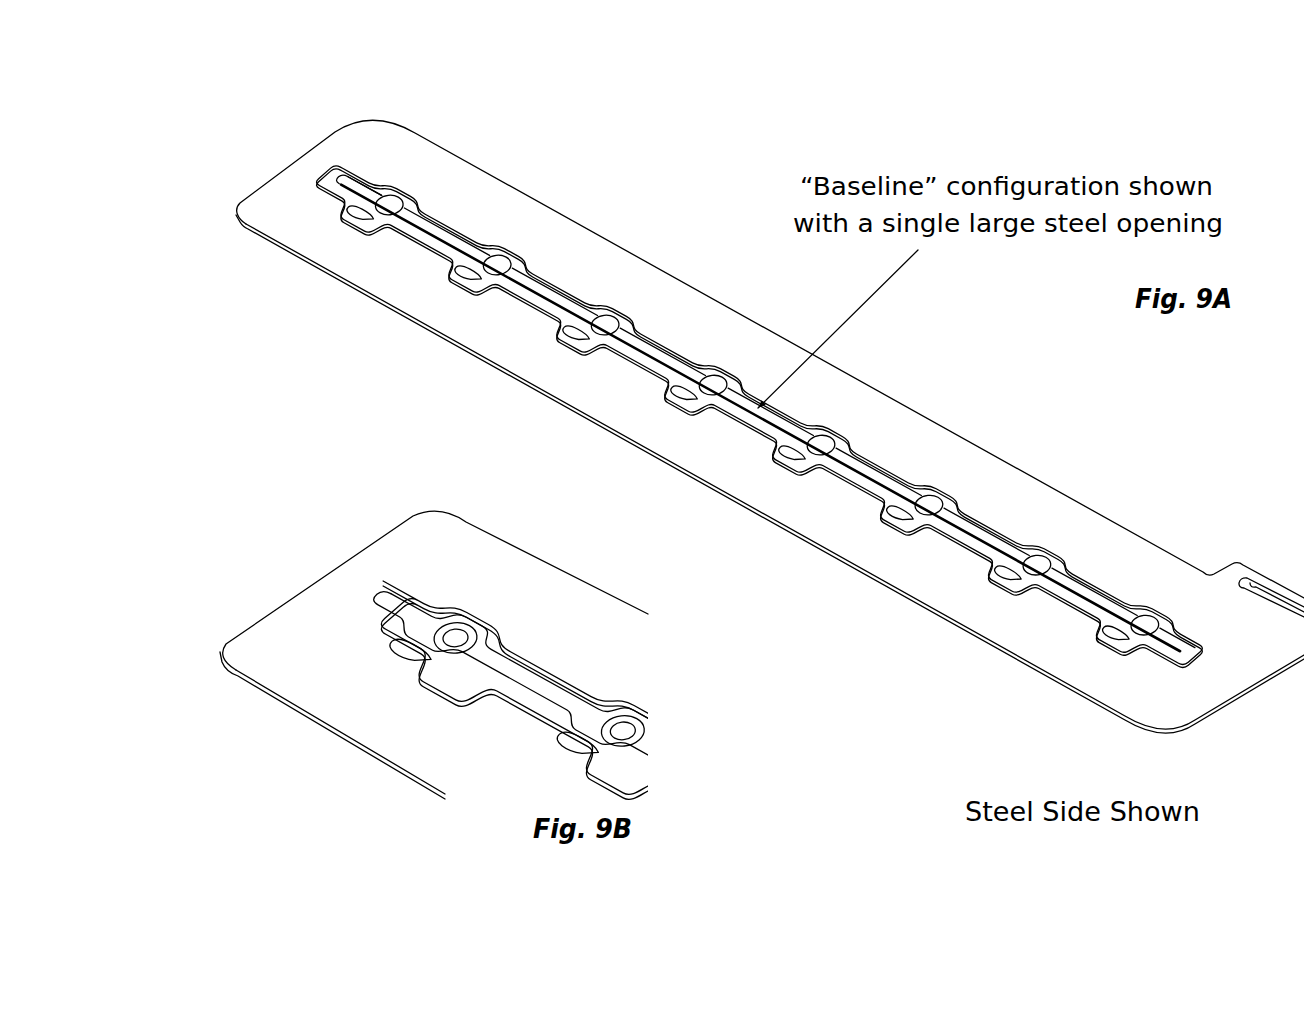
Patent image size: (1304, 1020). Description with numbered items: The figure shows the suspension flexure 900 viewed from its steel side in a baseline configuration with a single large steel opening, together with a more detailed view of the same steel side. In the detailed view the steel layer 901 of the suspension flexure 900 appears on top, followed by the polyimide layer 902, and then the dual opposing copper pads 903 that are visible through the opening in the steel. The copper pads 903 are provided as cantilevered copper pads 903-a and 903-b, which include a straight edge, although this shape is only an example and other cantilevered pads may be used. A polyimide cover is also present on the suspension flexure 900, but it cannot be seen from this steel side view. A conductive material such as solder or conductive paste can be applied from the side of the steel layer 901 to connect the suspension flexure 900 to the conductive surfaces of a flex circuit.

In FIG. 9A, the suspension flexure 900 is at (1008, 468).
In FIG. 9B, the steel layer 901 is at (316, 640).
In FIG. 9B, the polyimide layer 902 is at (568, 700).
In FIG. 9A, the dual opposing copper pads 903 is at (730, 357).
In FIG. 9B, the dual opposing copper pads 903 is at (539, 667).
In FIG. 9A, the cantilevered copper pad 903-a is at (510, 250).
In FIG. 9B, the cantilevered copper pad 903-a is at (457, 634).
In FIG. 9A, the cantilevered copper pad 903-b is at (467, 280).
In FIG. 9B, the cantilevered copper pad 903-b is at (427, 660).